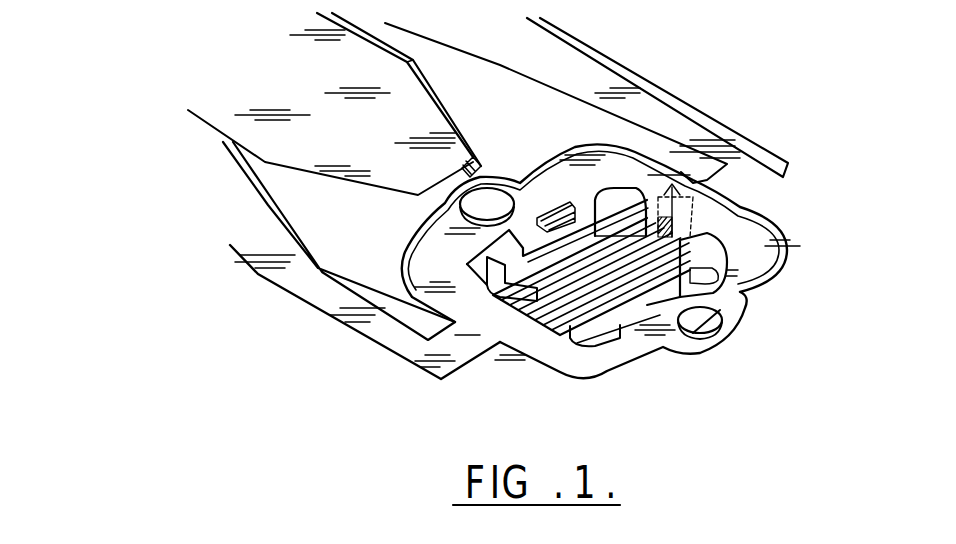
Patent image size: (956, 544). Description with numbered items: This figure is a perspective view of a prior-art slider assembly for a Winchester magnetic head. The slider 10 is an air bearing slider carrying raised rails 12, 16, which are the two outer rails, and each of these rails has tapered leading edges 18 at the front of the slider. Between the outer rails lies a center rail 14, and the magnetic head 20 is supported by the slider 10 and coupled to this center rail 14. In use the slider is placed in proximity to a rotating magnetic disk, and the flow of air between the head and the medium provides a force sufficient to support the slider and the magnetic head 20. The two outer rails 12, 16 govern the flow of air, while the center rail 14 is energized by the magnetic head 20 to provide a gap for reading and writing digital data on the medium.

The slider 10 is at (466, 266).
The raised rail 12 is at (606, 215).
The center rail 14 is at (547, 318).
The raised rail 16 is at (747, 300).
The tapered leading edges 18 is at (500, 312).
The magnetic head 20 is at (740, 207).